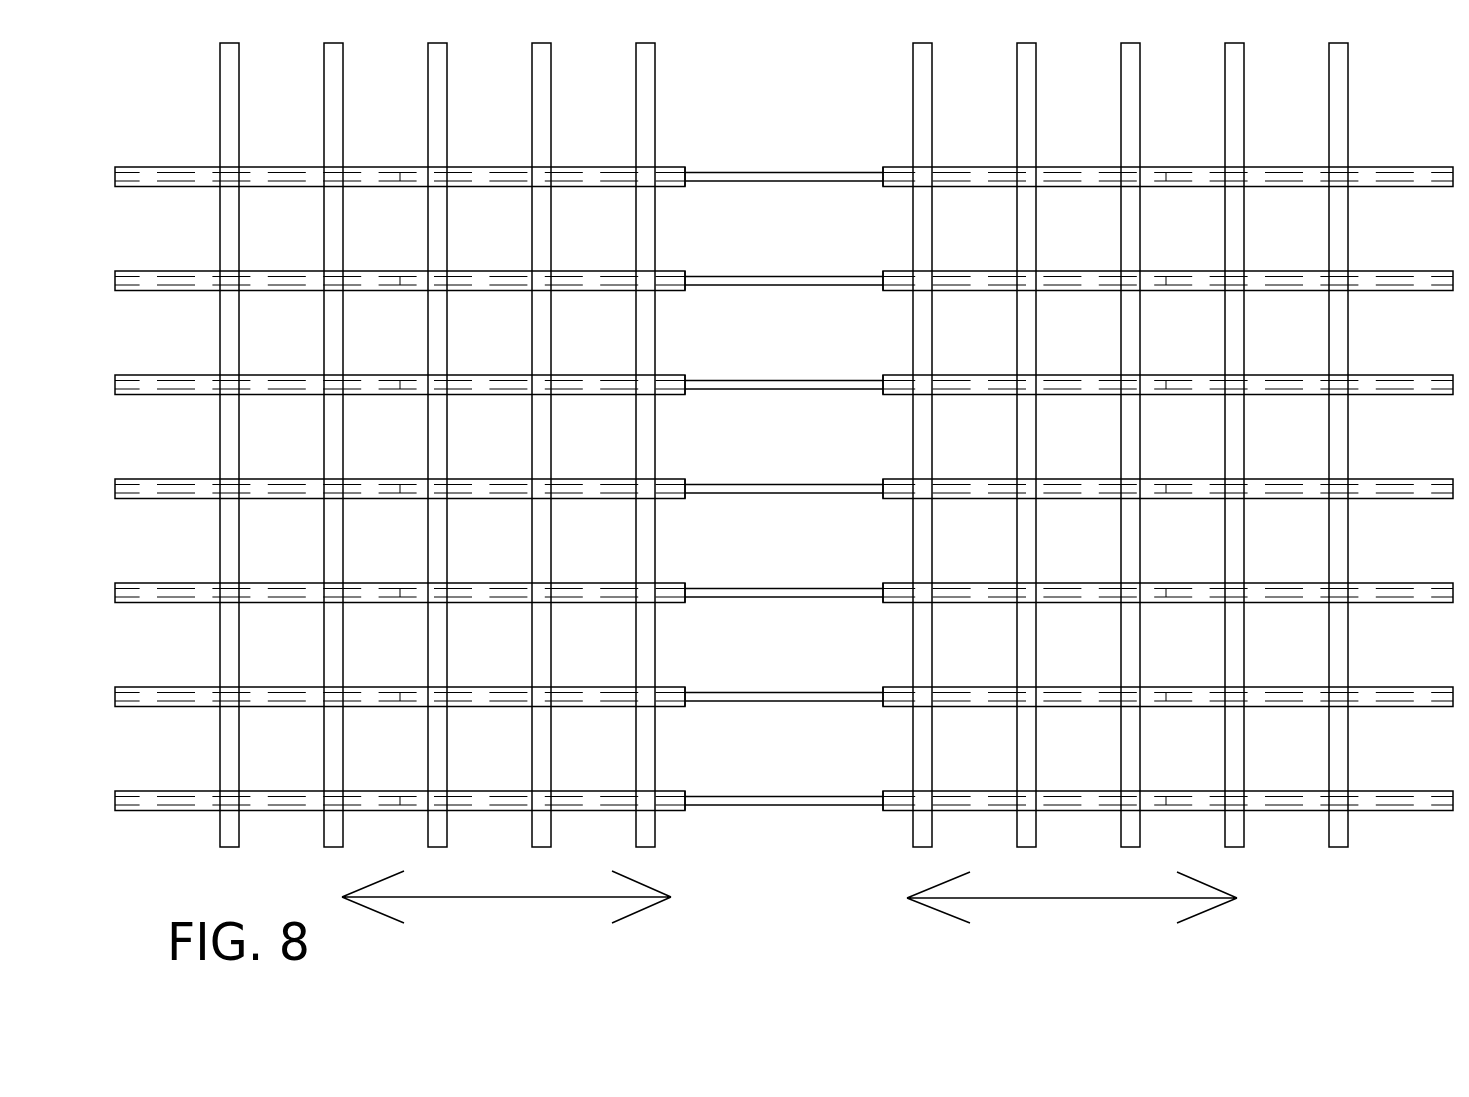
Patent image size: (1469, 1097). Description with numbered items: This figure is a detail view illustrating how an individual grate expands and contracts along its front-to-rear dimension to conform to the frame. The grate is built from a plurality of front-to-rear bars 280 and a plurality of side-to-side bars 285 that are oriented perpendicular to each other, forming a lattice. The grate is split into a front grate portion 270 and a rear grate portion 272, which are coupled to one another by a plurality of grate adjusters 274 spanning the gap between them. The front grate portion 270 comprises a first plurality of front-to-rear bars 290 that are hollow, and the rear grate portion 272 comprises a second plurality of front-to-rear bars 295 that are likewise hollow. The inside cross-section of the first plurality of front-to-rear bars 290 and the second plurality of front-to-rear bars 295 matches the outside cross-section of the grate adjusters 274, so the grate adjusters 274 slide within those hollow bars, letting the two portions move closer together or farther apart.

The front grate portion 270 is at (1293, 810).
The rear grate portion 272 is at (480, 810).
The grate adjusters 274 is at (725, 805).
The front-to-rear bars 280 is at (1385, 385).
The side-to-side bars 285 is at (1242, 72).
The first plurality of front-to-rear bars 290 is at (957, 282).
The second plurality of front-to-rear bars 295 is at (627, 285).